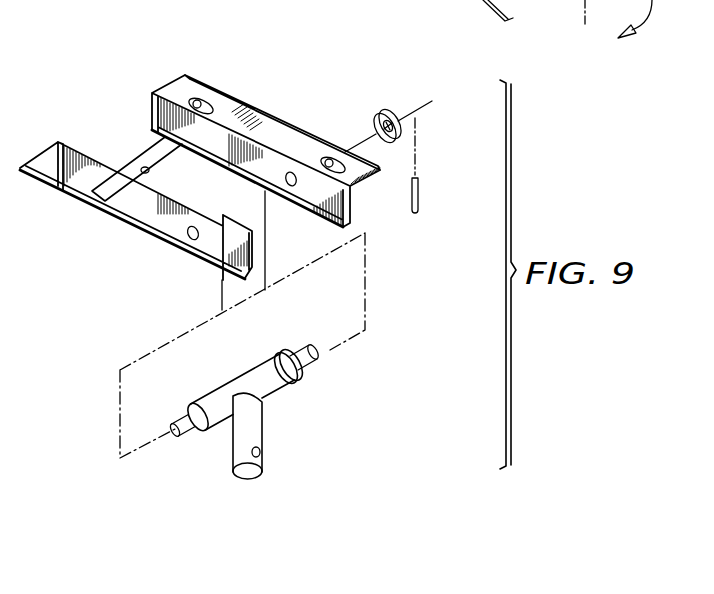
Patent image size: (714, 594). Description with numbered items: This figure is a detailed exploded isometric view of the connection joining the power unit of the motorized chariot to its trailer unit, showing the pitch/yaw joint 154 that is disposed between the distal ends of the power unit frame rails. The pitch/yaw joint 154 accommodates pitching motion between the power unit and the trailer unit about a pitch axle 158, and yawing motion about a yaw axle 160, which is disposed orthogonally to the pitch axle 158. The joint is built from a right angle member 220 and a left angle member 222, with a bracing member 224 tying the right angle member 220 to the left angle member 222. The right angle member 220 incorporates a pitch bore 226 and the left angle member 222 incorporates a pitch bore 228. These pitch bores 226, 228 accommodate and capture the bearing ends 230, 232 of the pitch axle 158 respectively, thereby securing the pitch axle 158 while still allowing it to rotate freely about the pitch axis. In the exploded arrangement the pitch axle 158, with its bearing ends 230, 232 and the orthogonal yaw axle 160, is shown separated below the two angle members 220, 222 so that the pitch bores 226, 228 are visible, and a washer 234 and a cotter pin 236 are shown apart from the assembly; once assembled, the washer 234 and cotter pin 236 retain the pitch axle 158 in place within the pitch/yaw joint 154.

The pitch/yaw joint 154 is at (241, 58).
The pitch axle 158 is at (233, 378).
The yaw axle 160 is at (262, 435).
The right angle member 220 is at (72, 198).
The left angle member 222 is at (168, 90).
The bracing member 224 is at (138, 163).
The pitch bore 226 is at (197, 232).
The pitch bore 228 is at (290, 176).
The bearing end 230 is at (190, 440).
The bearing end 232 is at (307, 370).
The washer 234 is at (380, 110).
The cotter pin 236 is at (418, 198).